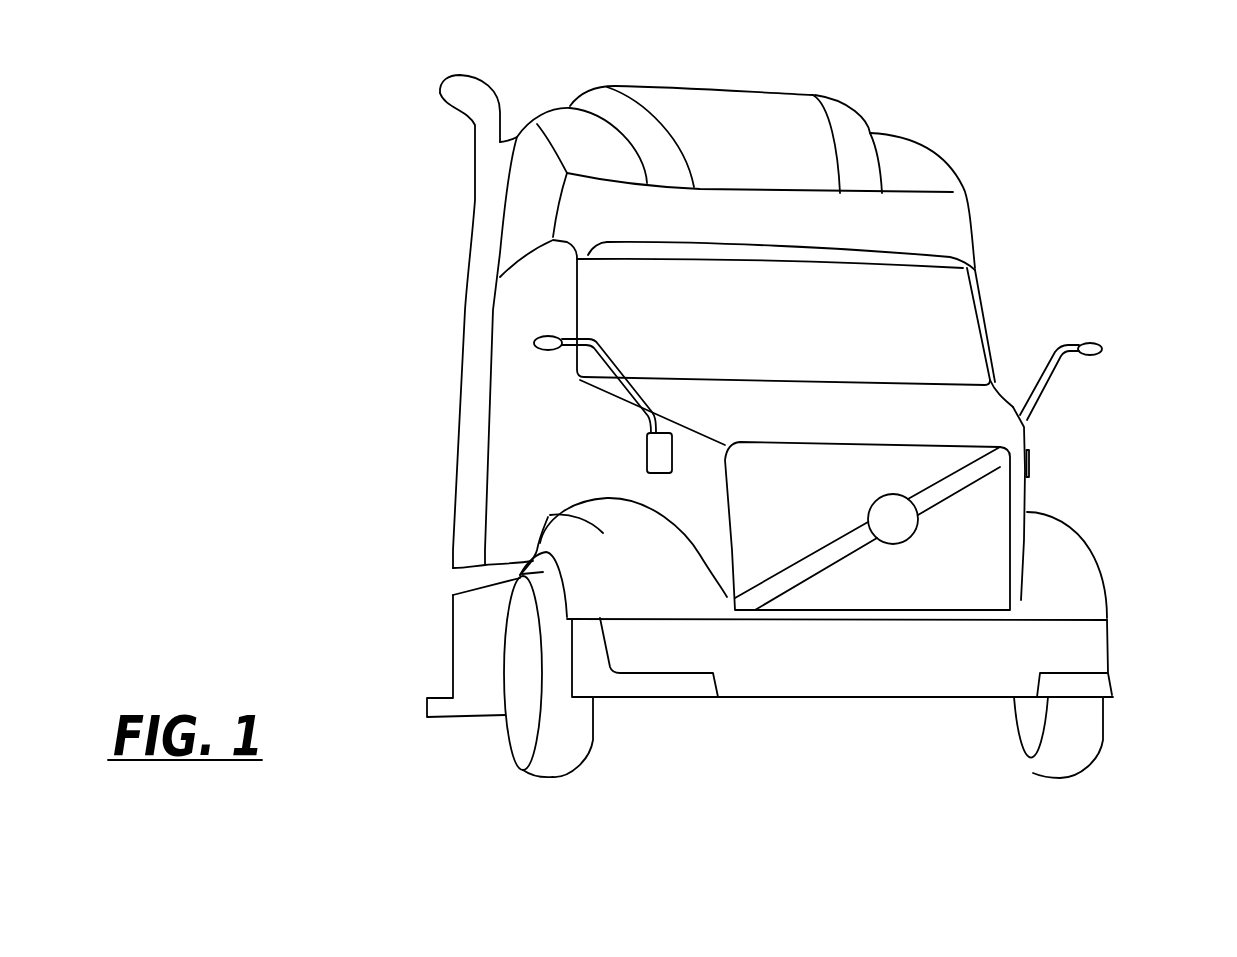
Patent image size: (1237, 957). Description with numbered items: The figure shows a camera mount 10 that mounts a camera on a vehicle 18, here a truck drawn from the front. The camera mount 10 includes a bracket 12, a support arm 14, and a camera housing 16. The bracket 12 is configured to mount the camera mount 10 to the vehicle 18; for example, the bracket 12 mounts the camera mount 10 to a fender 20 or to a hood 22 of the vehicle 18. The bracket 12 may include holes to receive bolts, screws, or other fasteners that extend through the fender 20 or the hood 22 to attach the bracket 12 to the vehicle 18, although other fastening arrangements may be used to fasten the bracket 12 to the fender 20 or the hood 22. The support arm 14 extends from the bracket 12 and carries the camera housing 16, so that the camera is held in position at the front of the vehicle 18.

The camera mount 10 is at (1112, 311).
The bracket 12 is at (655, 460).
The support arm 14 is at (1047, 386).
The camera housing 16 is at (533, 339).
The vehicle 18 is at (990, 178).
The fender 20 is at (1050, 553).
The hood 22 is at (953, 415).